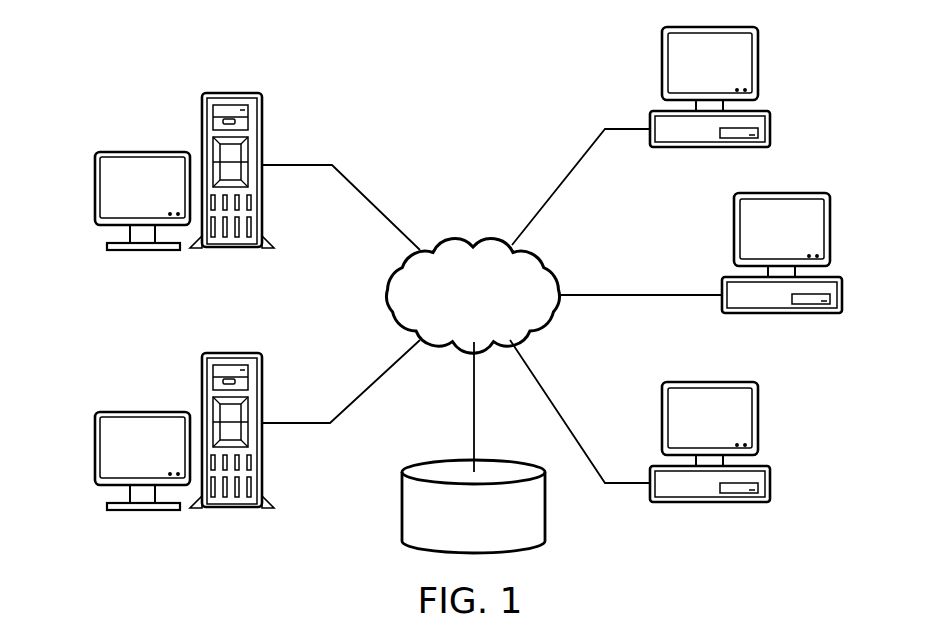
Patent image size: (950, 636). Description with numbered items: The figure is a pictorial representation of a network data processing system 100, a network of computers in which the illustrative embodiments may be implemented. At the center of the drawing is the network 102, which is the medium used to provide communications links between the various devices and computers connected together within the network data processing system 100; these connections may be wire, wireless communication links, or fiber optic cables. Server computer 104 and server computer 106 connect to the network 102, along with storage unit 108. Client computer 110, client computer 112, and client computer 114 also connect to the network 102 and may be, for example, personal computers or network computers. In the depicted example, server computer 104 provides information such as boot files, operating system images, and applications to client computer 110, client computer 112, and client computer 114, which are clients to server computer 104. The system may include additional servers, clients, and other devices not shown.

The network data processing system 100 is at (338, 72).
The network 102 is at (447, 247).
The server computer 104 is at (95, 190).
The server computer 106 is at (95, 447).
The storage unit 108 is at (402, 507).
The client computer 110 is at (770, 118).
The client computer 112 is at (842, 305).
The client computer 114 is at (770, 492).